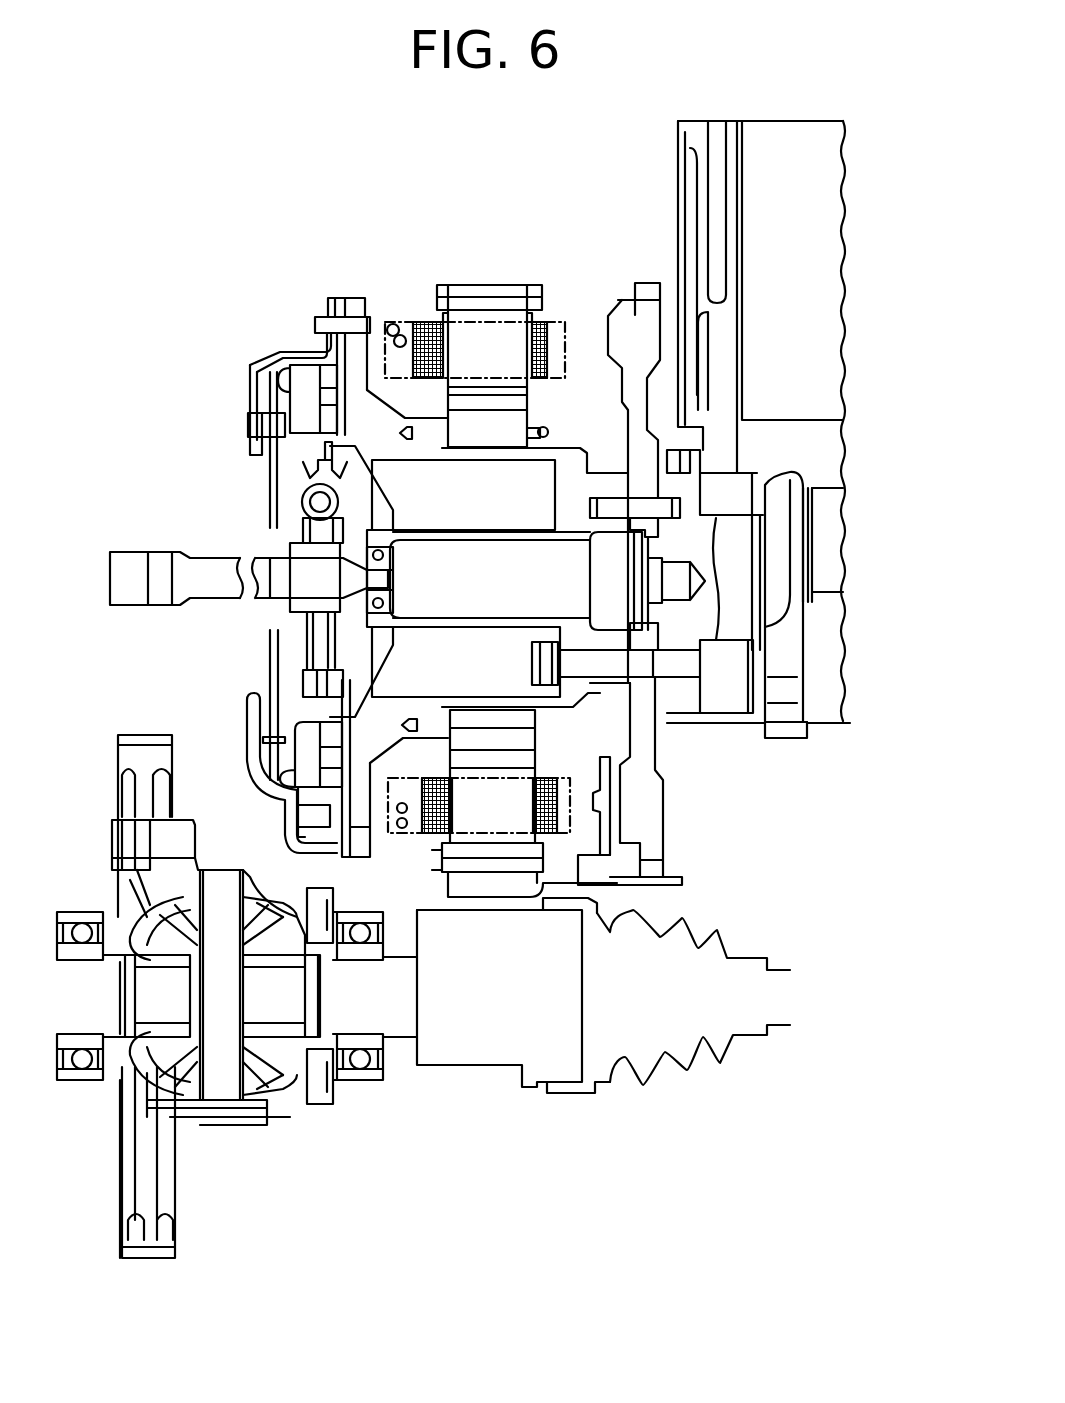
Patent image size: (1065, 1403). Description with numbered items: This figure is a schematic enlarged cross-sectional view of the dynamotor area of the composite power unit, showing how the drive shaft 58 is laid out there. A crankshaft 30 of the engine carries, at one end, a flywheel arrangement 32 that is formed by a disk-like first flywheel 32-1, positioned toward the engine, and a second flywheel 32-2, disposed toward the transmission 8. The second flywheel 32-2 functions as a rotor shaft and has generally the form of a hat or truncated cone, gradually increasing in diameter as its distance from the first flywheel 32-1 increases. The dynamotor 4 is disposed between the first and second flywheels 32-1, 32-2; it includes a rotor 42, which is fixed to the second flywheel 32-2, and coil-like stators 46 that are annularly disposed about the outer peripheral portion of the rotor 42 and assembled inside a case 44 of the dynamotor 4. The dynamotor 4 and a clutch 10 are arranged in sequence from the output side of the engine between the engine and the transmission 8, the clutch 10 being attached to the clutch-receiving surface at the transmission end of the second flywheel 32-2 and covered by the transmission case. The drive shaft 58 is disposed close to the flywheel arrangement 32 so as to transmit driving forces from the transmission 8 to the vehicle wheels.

The dynamotor 4 is at (465, 540).
The transmission 8 is at (227, 1138).
The clutch 10 is at (257, 340).
The crankshaft 30 is at (735, 586).
The flywheel arrangement 32 is at (622, 302).
The first flywheel 32-1 is at (647, 800).
The second flywheel 32-2 is at (377, 433).
The rotor 42 is at (472, 398).
The case 44 is at (613, 882).
The stators 46 is at (502, 310).
The drive shaft 58 is at (477, 1048).